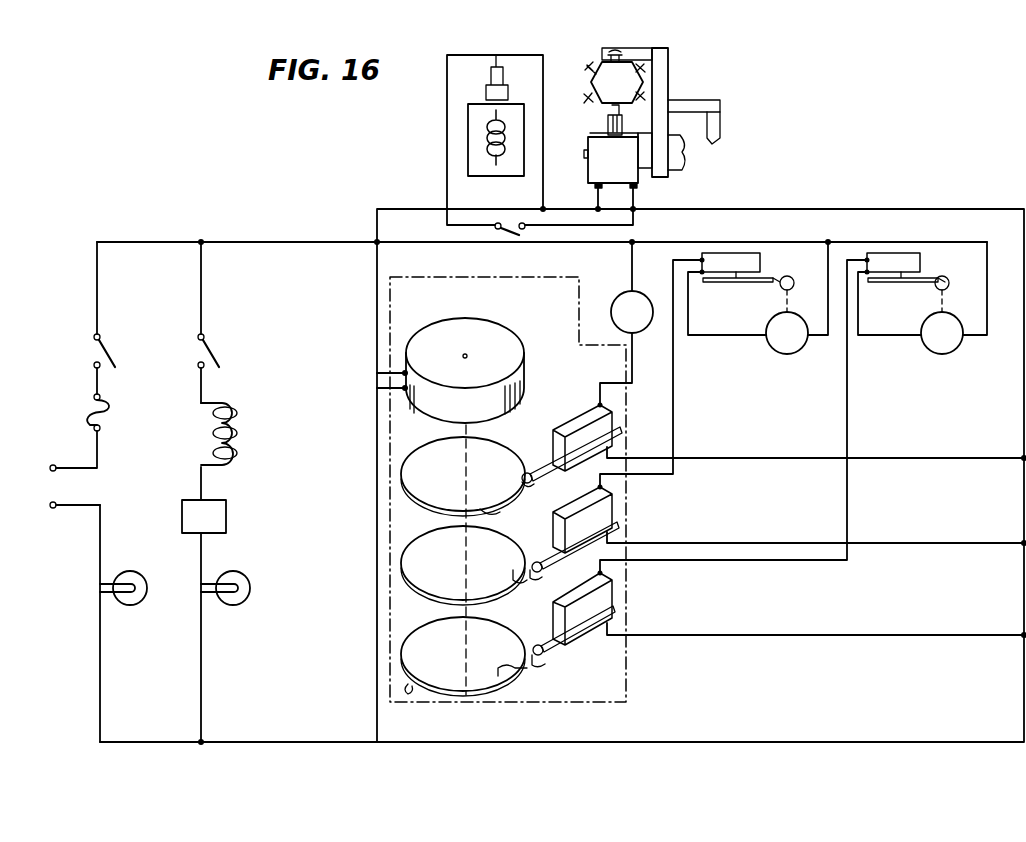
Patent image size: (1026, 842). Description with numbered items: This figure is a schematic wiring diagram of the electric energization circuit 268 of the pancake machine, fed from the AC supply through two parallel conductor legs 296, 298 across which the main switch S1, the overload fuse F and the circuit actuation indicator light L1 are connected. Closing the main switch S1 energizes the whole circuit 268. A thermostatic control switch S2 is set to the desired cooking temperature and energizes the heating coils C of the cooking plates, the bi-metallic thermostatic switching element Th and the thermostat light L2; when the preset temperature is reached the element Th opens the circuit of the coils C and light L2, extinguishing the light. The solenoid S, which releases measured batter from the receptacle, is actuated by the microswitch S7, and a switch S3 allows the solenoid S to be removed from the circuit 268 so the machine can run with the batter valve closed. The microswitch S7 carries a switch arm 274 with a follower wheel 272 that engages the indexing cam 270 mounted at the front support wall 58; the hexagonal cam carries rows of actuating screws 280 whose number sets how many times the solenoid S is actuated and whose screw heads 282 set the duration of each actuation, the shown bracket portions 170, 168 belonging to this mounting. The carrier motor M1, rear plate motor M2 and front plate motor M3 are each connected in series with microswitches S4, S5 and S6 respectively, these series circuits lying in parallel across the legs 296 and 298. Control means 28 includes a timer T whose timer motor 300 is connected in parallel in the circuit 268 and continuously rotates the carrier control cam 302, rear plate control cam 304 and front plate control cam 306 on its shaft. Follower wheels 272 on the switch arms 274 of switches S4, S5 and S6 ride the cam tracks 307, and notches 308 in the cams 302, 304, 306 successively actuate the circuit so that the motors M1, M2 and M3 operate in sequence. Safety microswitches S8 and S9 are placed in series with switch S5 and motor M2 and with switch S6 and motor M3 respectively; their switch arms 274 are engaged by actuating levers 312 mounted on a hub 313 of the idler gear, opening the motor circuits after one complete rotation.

The parallel conductor leg 296 is at (181, 231).
The parallel conductor leg 298 is at (149, 743).
The electric circuit 268 is at (44, 479).
The control means 28 is at (606, 267).
The timer motor 300 is at (443, 326).
The carrier control cam 302 is at (414, 456).
The rear plate control cam 304 is at (410, 544).
The front plate control cam 306 is at (413, 636).
The cam track 307 is at (502, 510).
The notch 308 is at (522, 473).
The follower wheel 272 is at (552, 674).
The switch arm 274 is at (545, 462).
The actuating screw 280 is at (588, 68).
The indexing cam 270 is at (603, 80).
The screw head 282 is at (590, 103).
The front support wall 58 is at (656, 67).
The arm 170 is at (719, 104).
The hanger member 168 is at (722, 127).
The actuating lever 312 is at (772, 283).
The hub 313 is at (795, 281).
The solenoid S is at (468, 134).
The main switch S1 is at (94, 352).
The thermostatic control switch S2 is at (198, 352).
The switch S3 is at (514, 222).
The microswitch S4 is at (584, 413).
The microswitch S5 is at (582, 503).
The microswitch S6 is at (573, 593).
The microswitch S7 is at (632, 175).
The safety microswitch S8 is at (761, 258).
The safety microswitch S9 is at (921, 258).
The overload fuse F is at (109, 413).
The heating coil C is at (234, 456).
The bi-metallic thermostatic switching element Th is at (204, 516).
The circuit actuation indicator light L1 is at (128, 603).
The thermostat light L2 is at (251, 591).
The carrier motor M1 is at (632, 312).
The rear plate motor M2 is at (787, 333).
The front plate motor M3 is at (942, 333).
The timer T is at (457, 359).
The AC supply AC is at (64, 489).